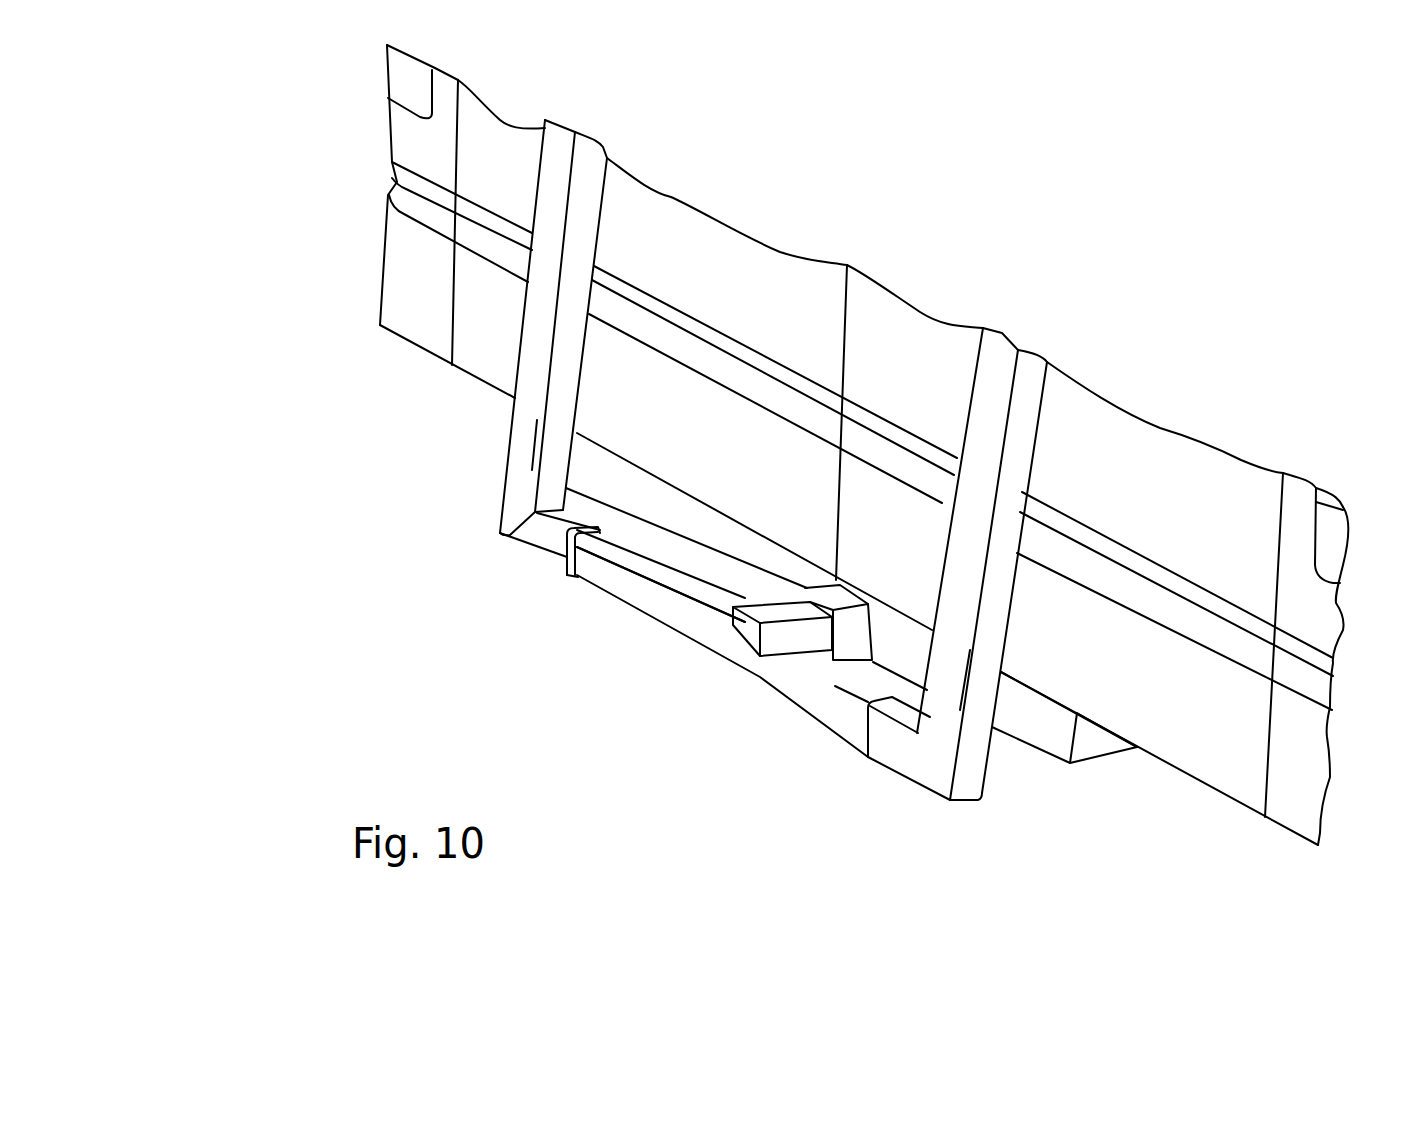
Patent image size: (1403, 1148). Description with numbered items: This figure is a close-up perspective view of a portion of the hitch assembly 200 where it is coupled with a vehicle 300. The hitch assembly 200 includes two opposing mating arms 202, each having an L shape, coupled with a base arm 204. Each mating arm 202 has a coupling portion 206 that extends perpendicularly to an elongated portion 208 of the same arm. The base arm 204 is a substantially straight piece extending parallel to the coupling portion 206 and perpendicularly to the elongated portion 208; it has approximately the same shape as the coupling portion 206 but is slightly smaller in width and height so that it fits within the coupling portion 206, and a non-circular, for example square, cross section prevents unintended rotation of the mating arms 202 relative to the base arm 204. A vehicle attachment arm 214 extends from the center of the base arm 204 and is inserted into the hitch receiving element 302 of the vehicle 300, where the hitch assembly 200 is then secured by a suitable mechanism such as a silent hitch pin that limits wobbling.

The vehicle 300 is at (364, 143).
The hitch assembly 200 is at (958, 817).
The mating arm 202 is at (533, 332).
The base arm 204 is at (767, 675).
The coupling portion 206 is at (540, 535).
The elongated portion 208 is at (533, 442).
The vehicle attachment arm 214 is at (788, 610).
The hitch receiving element 302 is at (858, 668).